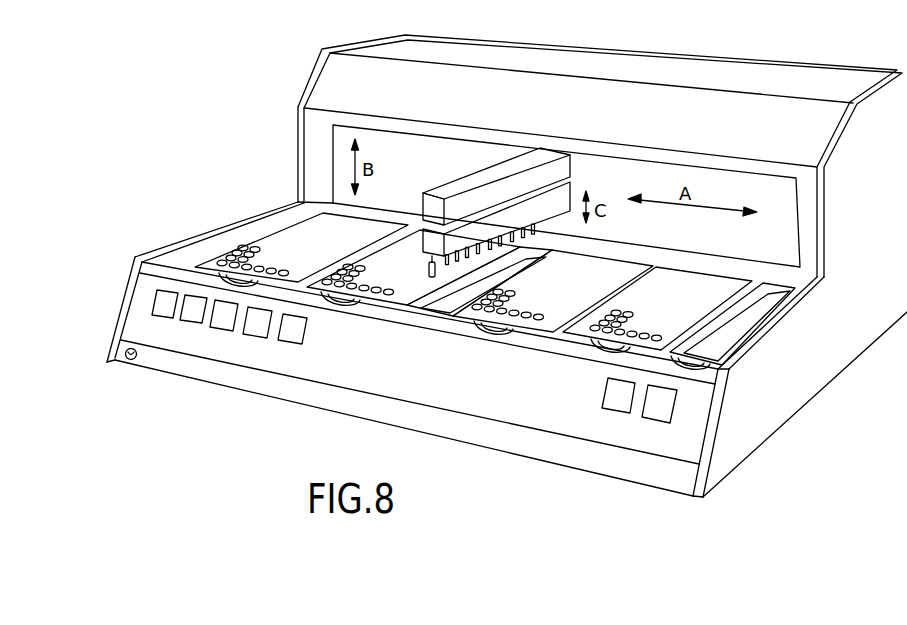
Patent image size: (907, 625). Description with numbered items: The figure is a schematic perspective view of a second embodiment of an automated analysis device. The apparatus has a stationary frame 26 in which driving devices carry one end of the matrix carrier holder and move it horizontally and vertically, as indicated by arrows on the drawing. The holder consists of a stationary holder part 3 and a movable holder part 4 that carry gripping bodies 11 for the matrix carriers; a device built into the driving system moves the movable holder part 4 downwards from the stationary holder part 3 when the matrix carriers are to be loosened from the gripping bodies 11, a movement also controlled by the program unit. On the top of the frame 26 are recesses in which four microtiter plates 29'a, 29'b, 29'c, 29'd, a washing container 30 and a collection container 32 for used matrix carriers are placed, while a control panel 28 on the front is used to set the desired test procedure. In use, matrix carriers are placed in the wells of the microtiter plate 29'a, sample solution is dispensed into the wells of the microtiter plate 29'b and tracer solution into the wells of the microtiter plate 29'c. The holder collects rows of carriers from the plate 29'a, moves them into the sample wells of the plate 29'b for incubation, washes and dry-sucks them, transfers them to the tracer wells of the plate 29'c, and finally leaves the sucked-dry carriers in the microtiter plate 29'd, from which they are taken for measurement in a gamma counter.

The stationary holder part 3 is at (475, 177).
The movable holder part 4 is at (570, 186).
The gripping bodies 11 is at (427, 268).
The stationary frame 26 is at (790, 397).
The control panel 28 is at (230, 328).
The microtiter plate 29'a is at (301, 232).
The microtiter plate 29'b is at (413, 291).
The microtiter plate 29'c is at (553, 292).
The microtiter plate 29'd is at (657, 309).
The washing container 30 is at (440, 307).
The collection container 32 is at (751, 313).